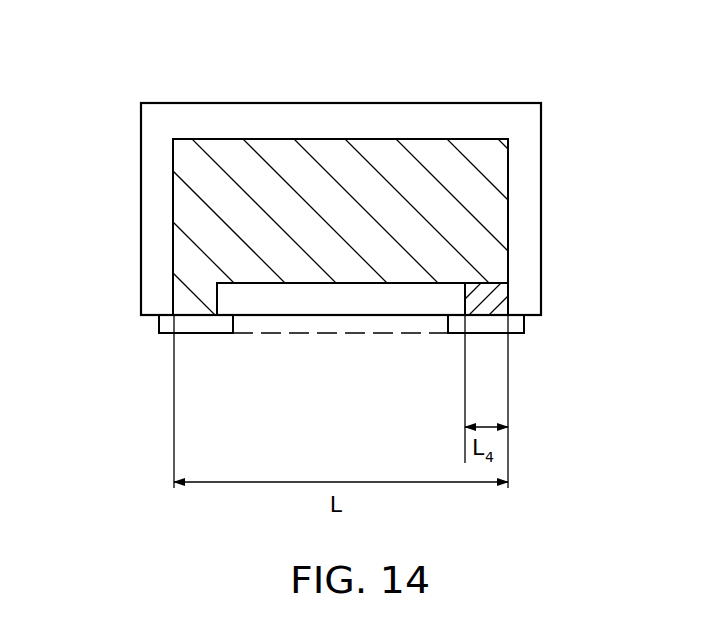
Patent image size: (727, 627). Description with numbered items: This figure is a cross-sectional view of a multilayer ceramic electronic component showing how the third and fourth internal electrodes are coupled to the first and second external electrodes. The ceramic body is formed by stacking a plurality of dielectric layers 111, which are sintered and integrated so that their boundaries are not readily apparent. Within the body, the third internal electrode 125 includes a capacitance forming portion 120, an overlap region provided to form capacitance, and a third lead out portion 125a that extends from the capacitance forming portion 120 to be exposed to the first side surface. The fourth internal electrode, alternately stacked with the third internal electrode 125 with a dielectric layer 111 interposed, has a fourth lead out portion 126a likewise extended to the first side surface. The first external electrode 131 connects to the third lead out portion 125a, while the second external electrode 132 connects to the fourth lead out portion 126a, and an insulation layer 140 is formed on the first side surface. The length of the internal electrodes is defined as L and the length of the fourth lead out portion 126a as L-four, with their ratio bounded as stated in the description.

The dielectric layer 111 is at (341, 118).
The capacitance forming portion 120 is at (508, 216).
The third internal electrode 125 is at (190, 205).
The third lead out portion 125a is at (190, 297).
The fourth lead out portion 126a is at (495, 297).
The first external electrode 131 is at (195, 326).
The second external electrode 132 is at (481, 326).
The insulation layer 140 is at (332, 334).